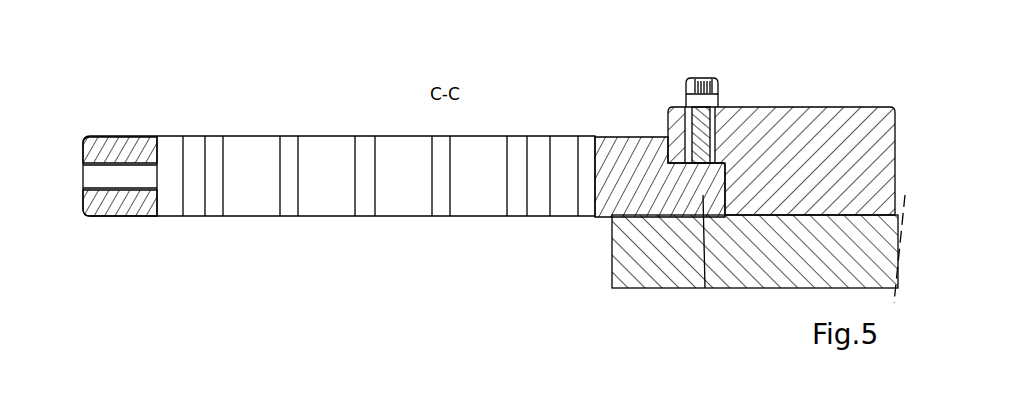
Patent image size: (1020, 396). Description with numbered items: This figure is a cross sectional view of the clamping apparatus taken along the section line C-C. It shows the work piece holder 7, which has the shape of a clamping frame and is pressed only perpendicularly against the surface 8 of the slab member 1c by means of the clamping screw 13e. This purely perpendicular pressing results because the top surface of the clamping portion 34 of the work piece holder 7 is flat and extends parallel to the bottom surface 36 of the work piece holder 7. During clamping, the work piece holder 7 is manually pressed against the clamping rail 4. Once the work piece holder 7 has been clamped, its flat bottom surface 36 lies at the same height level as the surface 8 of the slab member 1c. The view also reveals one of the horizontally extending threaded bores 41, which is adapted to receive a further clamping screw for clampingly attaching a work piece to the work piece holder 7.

The bottom surface 36 is at (470, 222).
The threaded bore 41 is at (115, 180).
The work piece holder 7 is at (626, 150).
The clamping rail 4 is at (806, 125).
The clamping screw 13e is at (702, 77).
The slab member 1c is at (636, 278).
The clamping portion 34 is at (705, 288).
The surface 8 is at (903, 208).